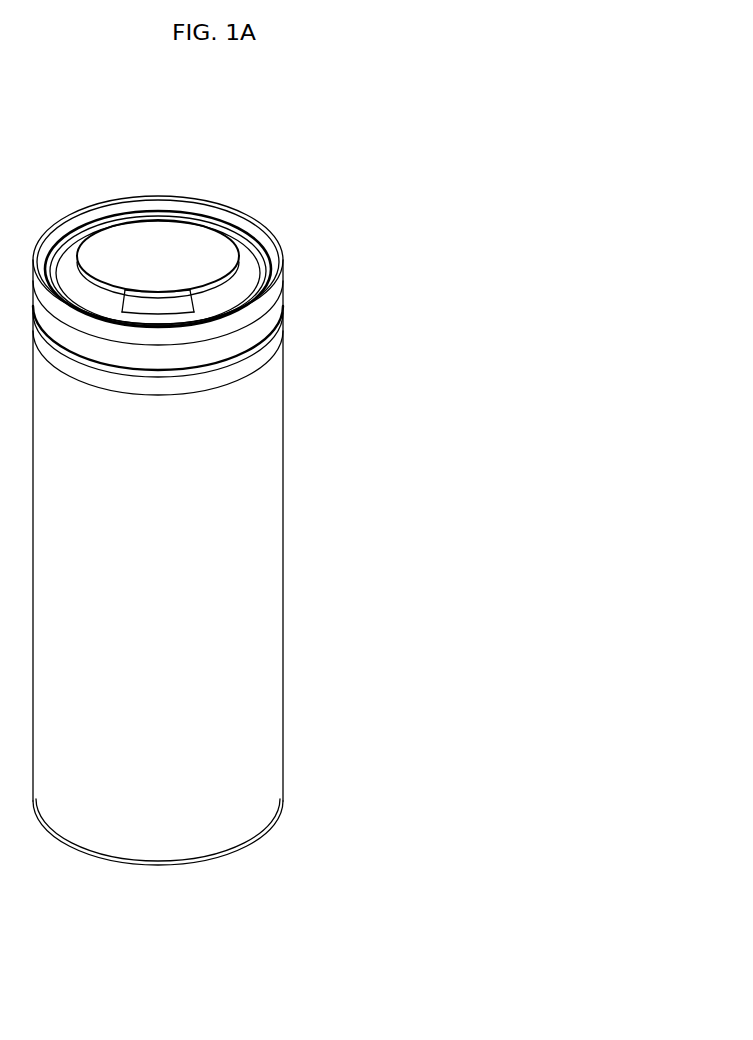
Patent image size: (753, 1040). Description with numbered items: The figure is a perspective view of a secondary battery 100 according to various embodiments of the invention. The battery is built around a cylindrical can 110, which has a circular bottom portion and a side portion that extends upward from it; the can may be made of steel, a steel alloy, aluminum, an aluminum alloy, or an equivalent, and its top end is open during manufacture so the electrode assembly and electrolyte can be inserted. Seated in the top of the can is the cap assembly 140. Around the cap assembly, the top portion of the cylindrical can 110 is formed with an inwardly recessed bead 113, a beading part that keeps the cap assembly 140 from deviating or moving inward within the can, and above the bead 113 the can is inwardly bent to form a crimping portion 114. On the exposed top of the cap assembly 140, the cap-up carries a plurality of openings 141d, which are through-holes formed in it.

The secondary battery 100 is at (271, 154).
The cylindrical can 110 is at (283, 553).
The bead 113 is at (283, 318).
The crimping portion 114 is at (272, 245).
The cap assembly 140 is at (160, 248).
The openings 141d is at (150, 302).